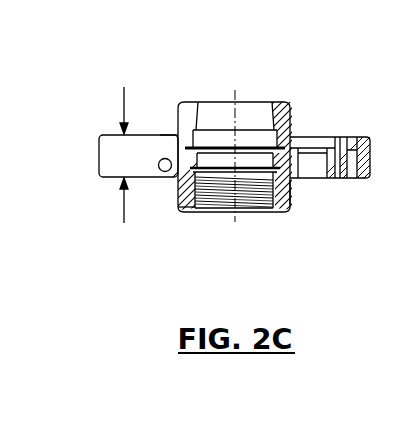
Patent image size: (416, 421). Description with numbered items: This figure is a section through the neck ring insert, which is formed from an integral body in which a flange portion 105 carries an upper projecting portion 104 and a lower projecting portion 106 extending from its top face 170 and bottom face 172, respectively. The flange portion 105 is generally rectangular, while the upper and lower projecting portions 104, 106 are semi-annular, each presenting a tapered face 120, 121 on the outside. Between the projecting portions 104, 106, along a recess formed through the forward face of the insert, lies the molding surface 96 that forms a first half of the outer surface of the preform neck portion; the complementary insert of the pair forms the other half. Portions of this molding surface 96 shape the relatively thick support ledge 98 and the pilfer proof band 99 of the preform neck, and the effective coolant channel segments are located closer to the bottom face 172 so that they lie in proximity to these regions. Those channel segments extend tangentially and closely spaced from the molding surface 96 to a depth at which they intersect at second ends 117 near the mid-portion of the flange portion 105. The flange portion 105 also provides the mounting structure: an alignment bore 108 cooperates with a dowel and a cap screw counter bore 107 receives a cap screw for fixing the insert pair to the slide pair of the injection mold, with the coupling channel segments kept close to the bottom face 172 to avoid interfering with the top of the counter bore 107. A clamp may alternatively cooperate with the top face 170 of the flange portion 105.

The support ledge 98 is at (238, 157).
The molding surface 96 is at (214, 101).
The pilfer proof band 99 is at (281, 210).
The upper projecting portion 104 is at (280, 102).
The flange portion 105 is at (118, 163).
The lower projecting portion 106 is at (182, 211).
The cap screw counter bore 107 is at (312, 137).
The alignment bore 108 is at (348, 137).
The second ends 117 is at (159, 171).
The tapered face 120 is at (162, 133).
The tapered face 121 is at (292, 191).
The top face 170 is at (125, 94).
The bottom face 172 is at (120, 215).